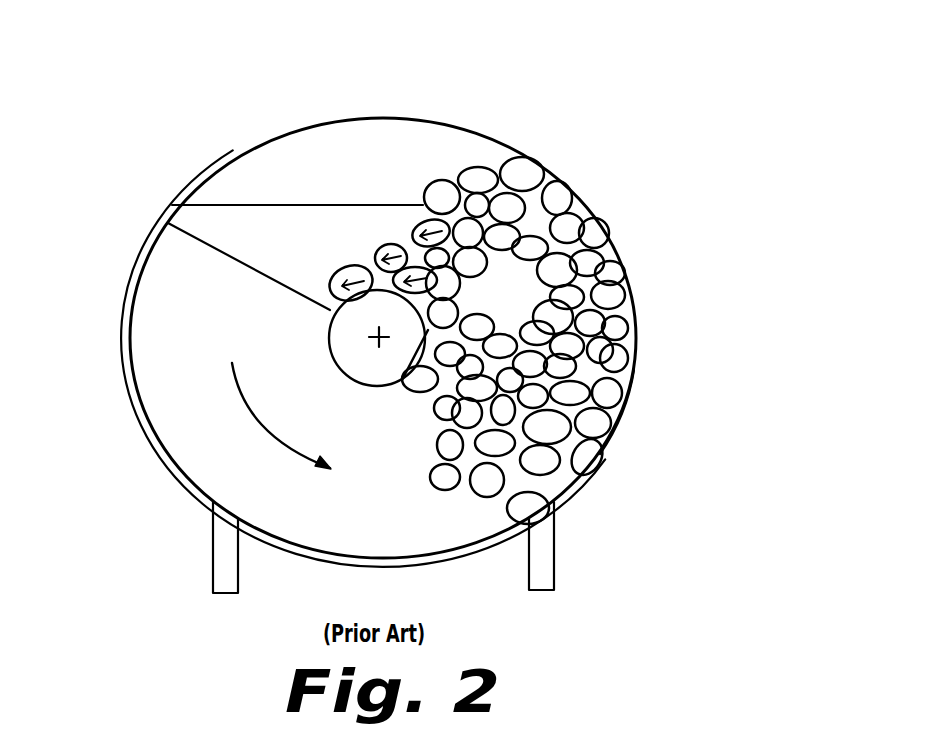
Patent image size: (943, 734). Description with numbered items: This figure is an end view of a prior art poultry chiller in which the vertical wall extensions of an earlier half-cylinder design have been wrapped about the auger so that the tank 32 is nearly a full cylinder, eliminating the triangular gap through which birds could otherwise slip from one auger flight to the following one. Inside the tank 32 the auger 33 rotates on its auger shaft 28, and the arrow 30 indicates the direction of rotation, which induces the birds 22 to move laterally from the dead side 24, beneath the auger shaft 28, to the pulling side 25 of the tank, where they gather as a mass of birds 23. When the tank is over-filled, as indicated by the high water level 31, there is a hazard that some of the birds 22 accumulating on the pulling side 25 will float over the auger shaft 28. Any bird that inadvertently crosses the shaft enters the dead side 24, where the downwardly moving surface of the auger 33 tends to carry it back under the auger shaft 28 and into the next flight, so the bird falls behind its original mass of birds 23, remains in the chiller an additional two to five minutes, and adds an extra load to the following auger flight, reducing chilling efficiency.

The birds 22 is at (623, 358).
The mass of birds 23 is at (520, 305).
The dead side 24 is at (214, 316).
The pulling side 25 is at (617, 417).
The auger shaft 28 is at (345, 342).
The direction of rotation 30 is at (280, 447).
The water level 31 is at (325, 200).
The tank 32 is at (150, 440).
The auger 33 is at (402, 140).